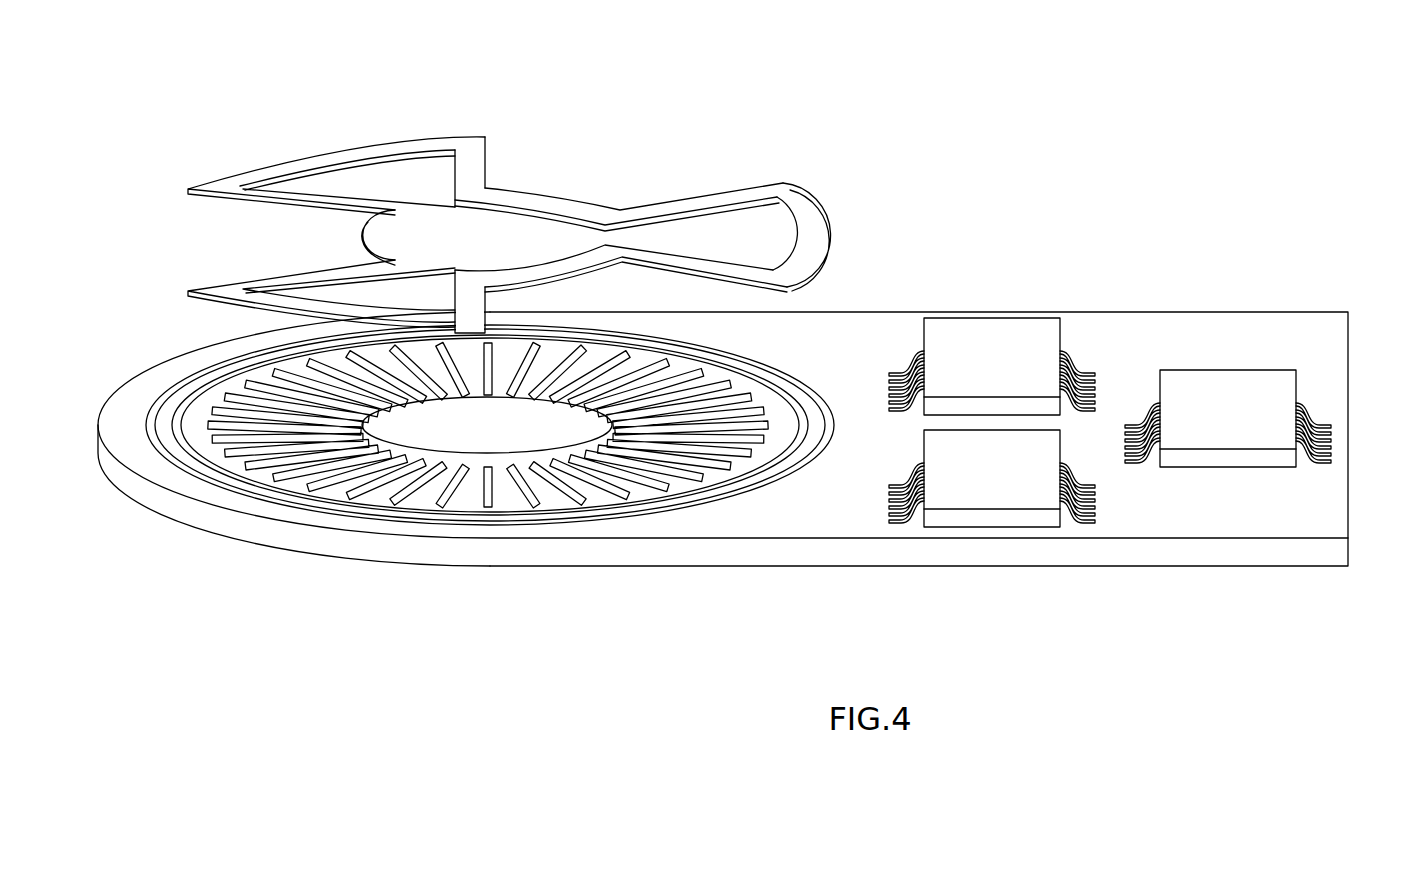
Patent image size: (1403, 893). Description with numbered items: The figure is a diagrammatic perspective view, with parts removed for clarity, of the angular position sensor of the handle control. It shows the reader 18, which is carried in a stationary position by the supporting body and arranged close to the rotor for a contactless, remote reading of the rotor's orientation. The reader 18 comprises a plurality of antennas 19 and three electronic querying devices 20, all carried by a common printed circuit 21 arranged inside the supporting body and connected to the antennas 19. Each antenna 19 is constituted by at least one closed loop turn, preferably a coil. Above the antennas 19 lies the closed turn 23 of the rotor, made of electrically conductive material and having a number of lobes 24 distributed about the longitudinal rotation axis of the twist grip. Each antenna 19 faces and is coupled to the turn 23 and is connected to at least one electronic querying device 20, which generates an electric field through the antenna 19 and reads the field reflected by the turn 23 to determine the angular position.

The reader 18 is at (723, 336).
The antennas 19 is at (490, 497).
The electronic querying devices 20 is at (1003, 330).
The printed circuit 21 is at (1240, 557).
The closed turn 23 is at (520, 203).
The lobes 24 is at (318, 149).